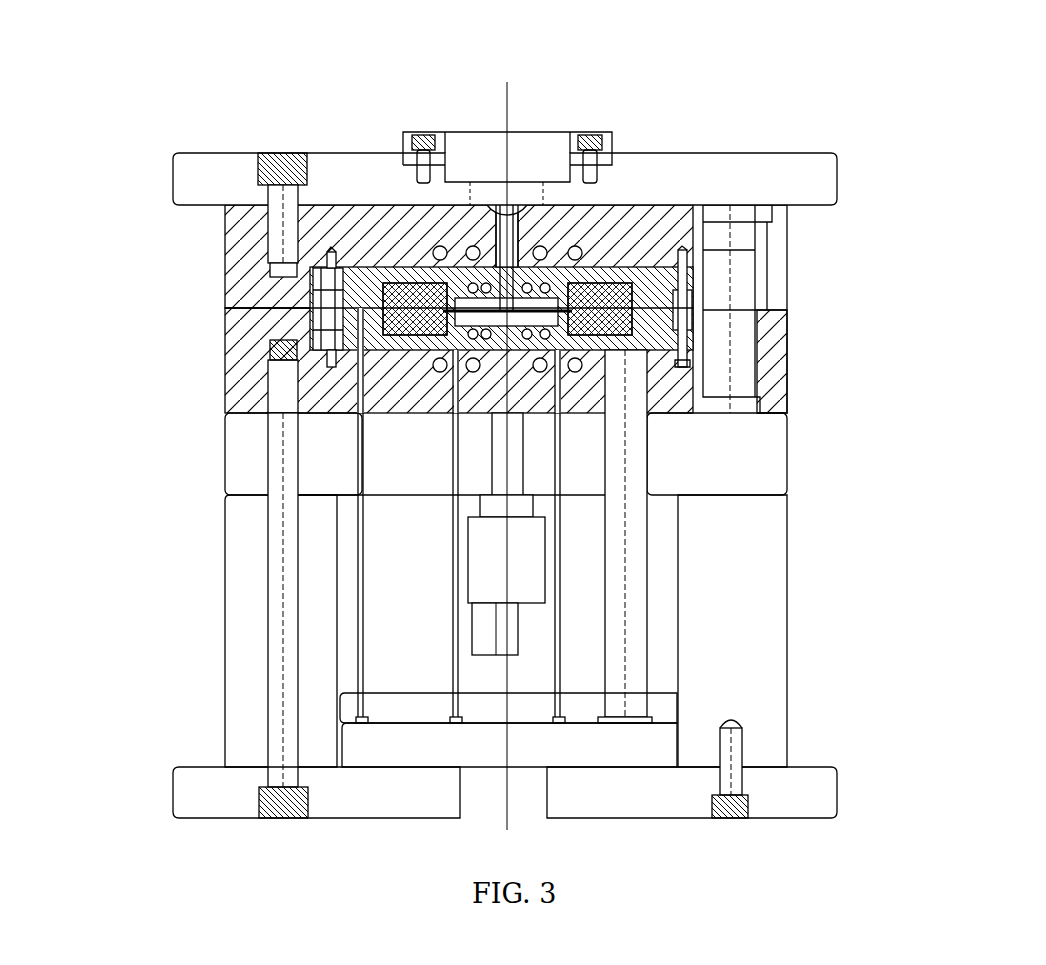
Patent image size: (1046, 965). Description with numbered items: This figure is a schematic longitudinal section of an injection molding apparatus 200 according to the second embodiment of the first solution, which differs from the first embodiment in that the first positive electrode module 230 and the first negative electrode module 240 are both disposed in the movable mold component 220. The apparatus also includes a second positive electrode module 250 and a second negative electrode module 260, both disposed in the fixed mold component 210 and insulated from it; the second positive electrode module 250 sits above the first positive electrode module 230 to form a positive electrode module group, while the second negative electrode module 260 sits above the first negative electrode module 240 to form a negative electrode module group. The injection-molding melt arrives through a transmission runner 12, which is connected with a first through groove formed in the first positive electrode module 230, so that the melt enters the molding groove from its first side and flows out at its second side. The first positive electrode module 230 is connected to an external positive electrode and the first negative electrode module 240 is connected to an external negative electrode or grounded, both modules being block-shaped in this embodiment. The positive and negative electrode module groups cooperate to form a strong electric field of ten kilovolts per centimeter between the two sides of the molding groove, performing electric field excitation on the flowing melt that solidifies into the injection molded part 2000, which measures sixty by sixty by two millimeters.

The injection molding apparatus 200 is at (500, 46).
The injected molded part 2000 is at (453, 267).
The transmission runner 12 is at (513, 268).
The fixed mold component 210 is at (225, 207).
The second positive electrode module 250 is at (318, 265).
The first positive electrode module 230 is at (317, 297).
The movable mold component 220 is at (252, 366).
The second negative electrode module 260 is at (700, 250).
The first negative electrode module 240 is at (690, 298).